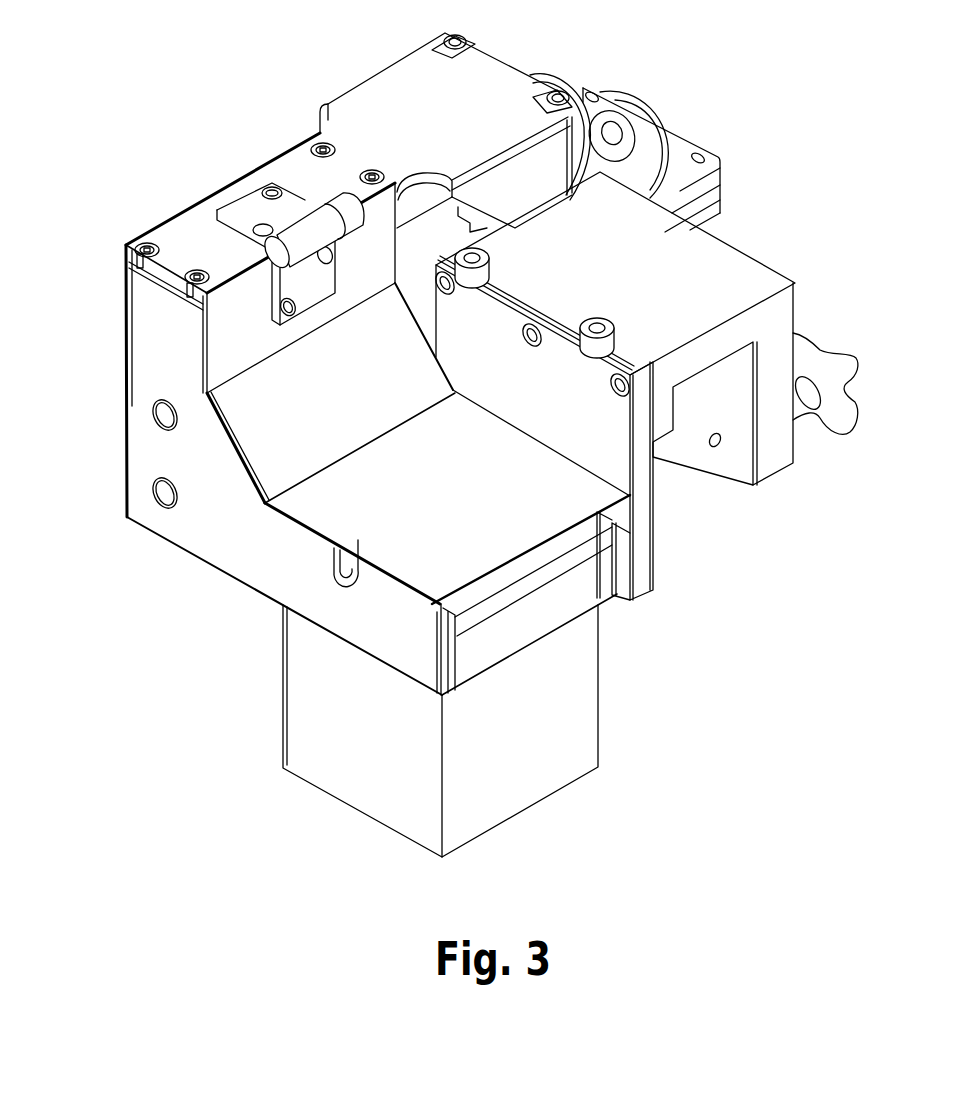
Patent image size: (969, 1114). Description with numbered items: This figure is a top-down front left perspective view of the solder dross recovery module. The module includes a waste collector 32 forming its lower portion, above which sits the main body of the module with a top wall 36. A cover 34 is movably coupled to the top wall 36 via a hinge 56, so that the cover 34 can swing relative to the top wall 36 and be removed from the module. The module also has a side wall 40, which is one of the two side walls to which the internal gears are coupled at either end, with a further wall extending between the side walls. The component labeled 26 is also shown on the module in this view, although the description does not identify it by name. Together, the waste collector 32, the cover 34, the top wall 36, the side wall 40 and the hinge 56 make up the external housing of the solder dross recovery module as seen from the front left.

The sensor housing / box 26 is at (731, 276).
The waste collector 32 is at (548, 768).
The cover 34 is at (557, 497).
The top wall 36 is at (190, 233).
The side wall 40 is at (147, 452).
The hinge 56 is at (292, 200).